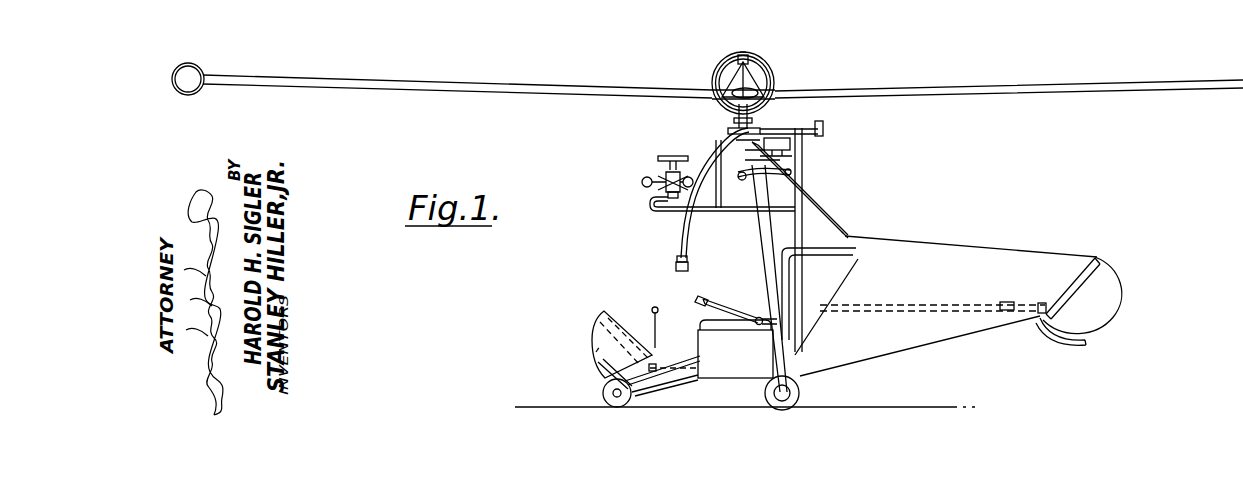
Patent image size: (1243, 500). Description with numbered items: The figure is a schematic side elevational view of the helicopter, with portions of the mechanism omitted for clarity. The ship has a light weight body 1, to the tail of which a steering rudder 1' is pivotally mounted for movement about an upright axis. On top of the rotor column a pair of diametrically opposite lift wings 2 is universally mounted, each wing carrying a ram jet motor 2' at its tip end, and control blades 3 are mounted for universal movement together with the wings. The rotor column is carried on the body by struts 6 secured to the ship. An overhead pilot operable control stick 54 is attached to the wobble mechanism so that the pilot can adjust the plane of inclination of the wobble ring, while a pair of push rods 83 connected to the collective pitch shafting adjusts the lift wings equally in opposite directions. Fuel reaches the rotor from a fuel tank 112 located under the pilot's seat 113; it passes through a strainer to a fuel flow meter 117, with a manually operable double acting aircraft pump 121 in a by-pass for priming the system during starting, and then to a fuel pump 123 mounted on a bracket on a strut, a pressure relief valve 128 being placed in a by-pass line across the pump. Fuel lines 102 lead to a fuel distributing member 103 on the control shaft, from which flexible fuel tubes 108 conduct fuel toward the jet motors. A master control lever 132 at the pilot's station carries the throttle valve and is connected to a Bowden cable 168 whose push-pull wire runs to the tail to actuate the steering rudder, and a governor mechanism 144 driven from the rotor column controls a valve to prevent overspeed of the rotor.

The body 1 is at (946, 304).
The steering rudder 1' is at (1109, 301).
The lift wings 2 is at (723, 78).
The ram jet motor 2' is at (203, 69).
The control blades 3 is at (728, 101).
The struts 6 is at (817, 208).
The control stick 54 is at (679, 226).
The push rods 83 is at (763, 86).
The fuel lines 102 is at (769, 72).
The fuel distributing member 103 is at (739, 55).
The flexible fuel tube 108 is at (766, 58).
The fuel tank 112 is at (753, 362).
The pilot's seat 113 is at (698, 317).
The fuel flow meter 117 is at (600, 350).
The aircraft pump 121 is at (654, 384).
The fuel pump 123 is at (773, 129).
The pressure relief valve 128 is at (826, 125).
The master control lever 132 is at (715, 297).
The governor mechanism 144 is at (655, 174).
The Bowden cable 168 is at (873, 311).